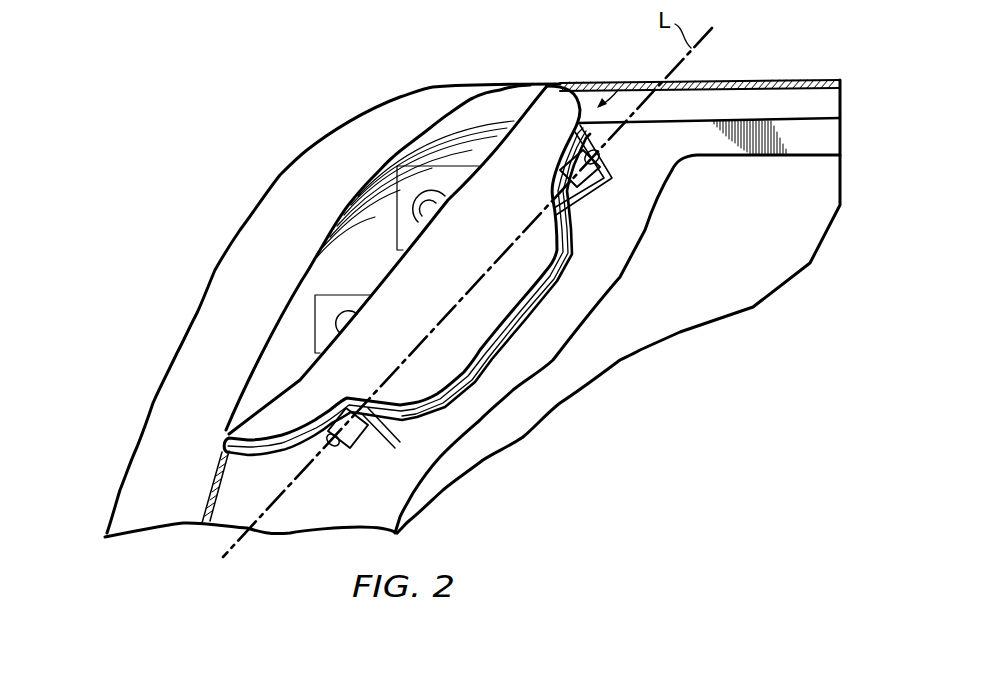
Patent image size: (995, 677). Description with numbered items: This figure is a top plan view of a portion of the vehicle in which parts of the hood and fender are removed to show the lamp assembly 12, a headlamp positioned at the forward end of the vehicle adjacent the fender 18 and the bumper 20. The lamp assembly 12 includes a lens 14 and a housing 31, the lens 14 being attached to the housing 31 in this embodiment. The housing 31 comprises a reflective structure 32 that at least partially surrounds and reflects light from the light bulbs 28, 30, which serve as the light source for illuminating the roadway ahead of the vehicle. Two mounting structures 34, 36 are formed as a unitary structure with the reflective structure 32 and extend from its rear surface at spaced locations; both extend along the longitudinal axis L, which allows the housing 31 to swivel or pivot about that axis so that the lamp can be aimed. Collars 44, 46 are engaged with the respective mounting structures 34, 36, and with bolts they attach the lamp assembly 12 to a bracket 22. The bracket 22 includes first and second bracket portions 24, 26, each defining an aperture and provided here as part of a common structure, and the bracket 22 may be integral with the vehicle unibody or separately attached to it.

The lamp assembly 12 is at (310, 212).
The lens 14 is at (462, 123).
The fender 18 is at (733, 80).
The bumper 20 is at (250, 252).
The bracket 22 is at (566, 284).
The first bracket portion 24 is at (603, 180).
The second bracket portion 26 is at (338, 447).
The light bulb 28 is at (423, 240).
The light bulb 30 is at (343, 323).
The housing 31 is at (615, 82).
The reflective structure 32 is at (537, 120).
The mounting structure 34 is at (582, 207).
The mounting structure 36 is at (383, 410).
The collar 44 is at (645, 236).
The collar 46 is at (362, 446).